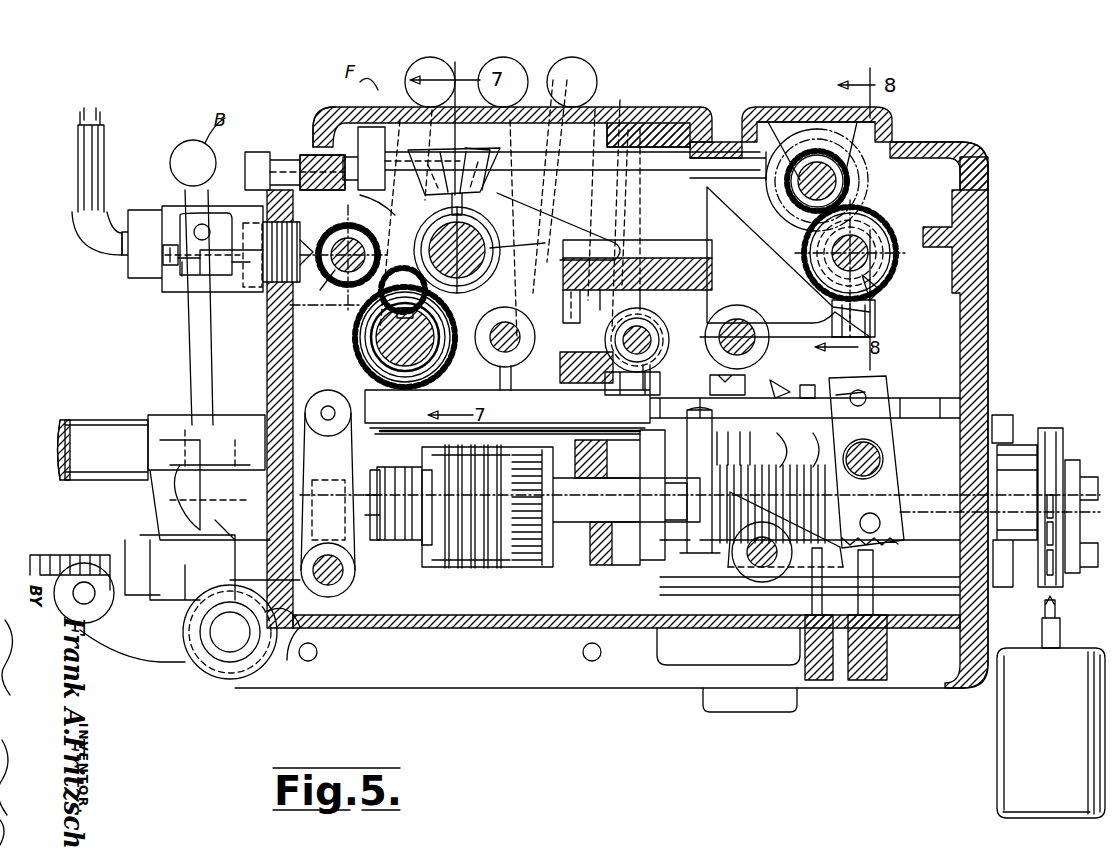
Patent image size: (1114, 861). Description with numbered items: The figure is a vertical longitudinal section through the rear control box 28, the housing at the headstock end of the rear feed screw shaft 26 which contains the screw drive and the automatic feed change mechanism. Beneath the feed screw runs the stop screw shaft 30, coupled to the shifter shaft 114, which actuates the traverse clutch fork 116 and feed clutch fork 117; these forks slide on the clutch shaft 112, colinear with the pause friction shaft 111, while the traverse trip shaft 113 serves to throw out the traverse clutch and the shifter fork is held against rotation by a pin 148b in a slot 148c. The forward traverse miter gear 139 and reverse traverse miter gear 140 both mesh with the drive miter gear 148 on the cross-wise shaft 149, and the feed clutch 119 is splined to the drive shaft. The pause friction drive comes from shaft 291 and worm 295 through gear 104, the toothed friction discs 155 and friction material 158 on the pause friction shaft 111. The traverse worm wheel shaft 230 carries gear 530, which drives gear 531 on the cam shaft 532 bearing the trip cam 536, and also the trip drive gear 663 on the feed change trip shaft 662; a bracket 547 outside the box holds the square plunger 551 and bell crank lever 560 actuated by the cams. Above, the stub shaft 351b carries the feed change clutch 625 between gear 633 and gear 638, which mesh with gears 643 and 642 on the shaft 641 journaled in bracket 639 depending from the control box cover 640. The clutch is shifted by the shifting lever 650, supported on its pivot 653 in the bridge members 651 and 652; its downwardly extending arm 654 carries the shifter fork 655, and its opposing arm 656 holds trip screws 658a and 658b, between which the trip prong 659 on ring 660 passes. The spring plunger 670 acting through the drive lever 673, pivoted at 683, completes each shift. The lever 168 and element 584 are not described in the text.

The rear control box 28 is at (990, 330).
The rear feed screw shaft 26 is at (112, 420).
The stop screw shaft 30 is at (40, 556).
The gear 104 is at (530, 568).
The pause friction shaft 111 is at (370, 498).
The clutch shaft 112 is at (648, 508).
The traverse trip shaft 113 is at (788, 385).
The shifter shaft 114 is at (426, 570).
The traverse clutch fork 116 is at (833, 498).
The feed clutch fork 117 is at (690, 535).
The feed clutch 119 is at (718, 388).
The forward traverse miter gear 139 is at (772, 375).
The reverse traverse miter gear 140 is at (905, 385).
The drive miter gear 148 is at (828, 378).
The pin 148b is at (770, 620).
The slot 148c is at (700, 622).
The shaft 149 is at (830, 442).
The toothed friction discs 155 is at (490, 570).
The friction material 158 is at (503, 570).
The lever 168 is at (328, 493).
The traverse worm wheel shaft 230 is at (430, 390).
The shaft 291 is at (630, 318).
The worm 295 is at (662, 380).
The stub shaft 351b is at (860, 262).
The gear 530 is at (348, 300).
The gear 531 is at (405, 337).
The cam shaft 532 is at (340, 268).
The trip cam 536 is at (345, 238).
The bracket 547 is at (163, 210).
The square plunger 551 is at (262, 280).
The bell crank lever 560 is at (165, 246).
The conduit 584 is at (76, 176).
The feed change clutch 625 is at (890, 215).
The gear 633 is at (860, 200).
The gear 638 is at (895, 230).
The bracket 639 is at (744, 112).
The control box cover 640 is at (760, 110).
The shaft 641 is at (790, 205).
The gear 642 is at (803, 125).
The gear 643 is at (775, 188).
The shifting lever 650 is at (748, 242).
The bridge member 651 is at (655, 125).
The bridge member 652 is at (565, 288).
The pivot 653 is at (626, 212).
The downwardly extending arm 654 is at (877, 330).
The shifter fork 655 is at (882, 295).
The opposing arm 656 is at (365, 192).
The trip screw 658a is at (432, 150).
The trip screw 658b is at (478, 148).
The trip prong 659 is at (386, 211).
The ring 660 is at (490, 212).
The feed change trip shaft 662 is at (500, 252).
The trip drive gear 663 is at (520, 333).
The spring plunger 670 is at (320, 148).
The drive lever 673 is at (398, 268).
The pivot 683 is at (318, 118).